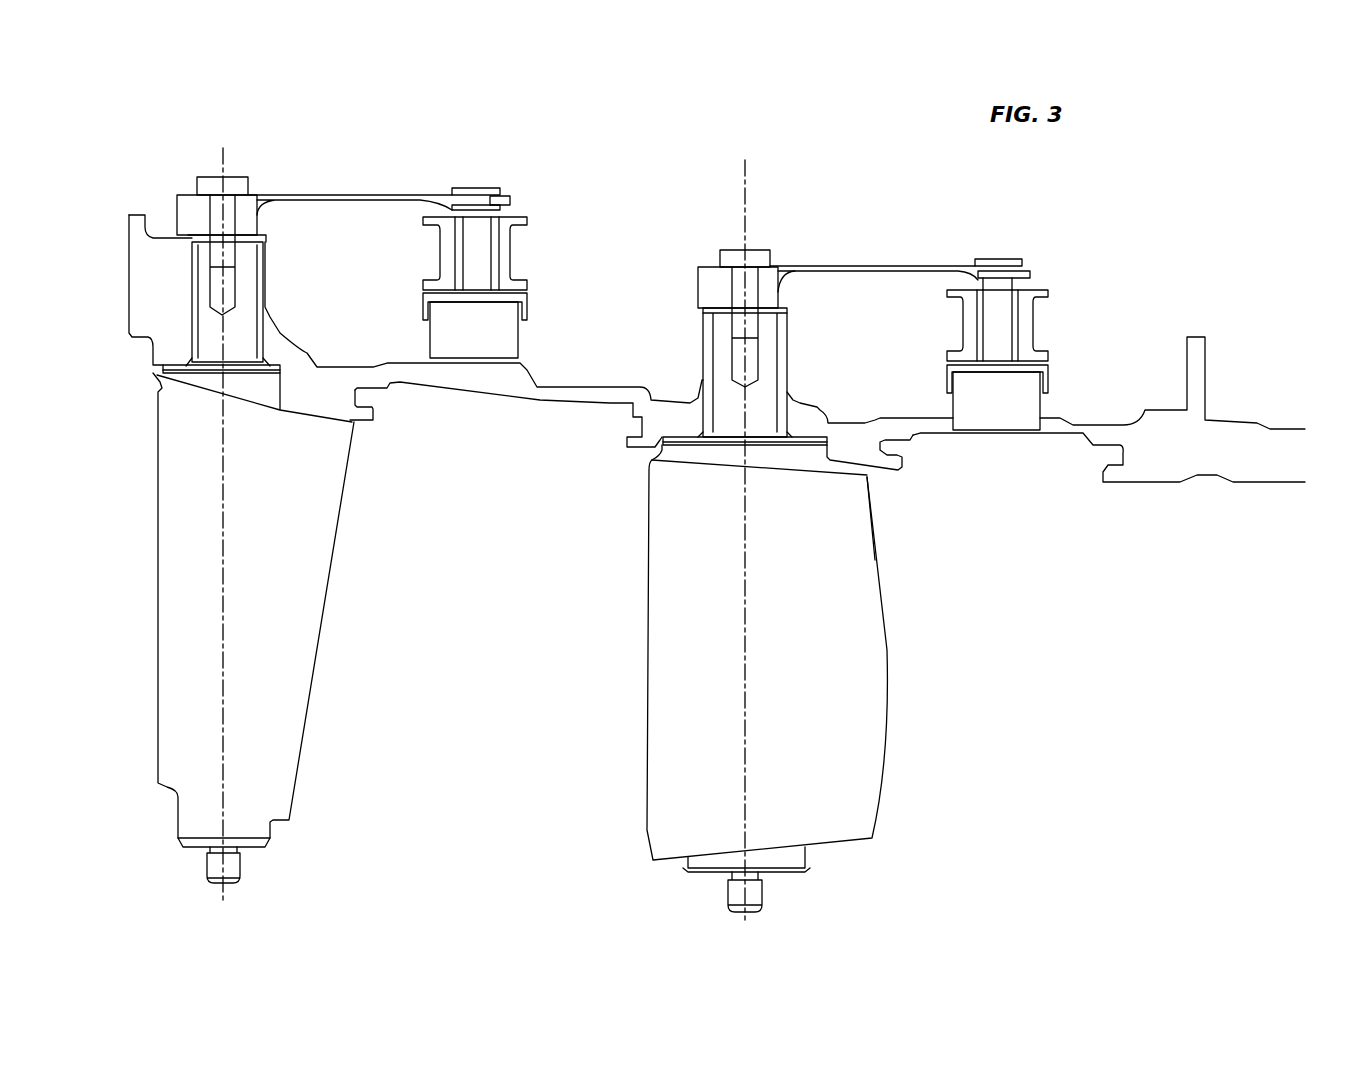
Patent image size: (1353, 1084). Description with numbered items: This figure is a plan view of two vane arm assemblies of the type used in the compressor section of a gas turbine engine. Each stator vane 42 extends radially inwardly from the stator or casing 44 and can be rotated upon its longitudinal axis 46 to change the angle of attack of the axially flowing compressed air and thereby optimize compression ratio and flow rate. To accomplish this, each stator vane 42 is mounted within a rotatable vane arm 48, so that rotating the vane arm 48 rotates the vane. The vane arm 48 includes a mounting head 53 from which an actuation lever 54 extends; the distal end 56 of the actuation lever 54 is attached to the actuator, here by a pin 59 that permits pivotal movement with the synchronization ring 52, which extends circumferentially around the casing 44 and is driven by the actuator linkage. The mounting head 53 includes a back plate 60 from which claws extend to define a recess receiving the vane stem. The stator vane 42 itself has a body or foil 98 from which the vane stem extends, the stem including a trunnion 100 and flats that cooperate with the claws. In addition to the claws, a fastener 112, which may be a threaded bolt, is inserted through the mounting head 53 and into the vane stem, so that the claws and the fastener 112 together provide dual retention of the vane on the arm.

The stator vane 42 is at (287, 728).
The casing 44 is at (1236, 433).
The longitudinal axis 46 is at (223, 787).
The vane arm 48 is at (390, 193).
The synchronization ring 52 is at (447, 280).
The mounting head 53 is at (185, 193).
The actuation lever 54 is at (511, 200).
The distal end 56 is at (484, 166).
The pin 59 is at (490, 192).
The back plate 60 is at (787, 263).
The foil 98 is at (863, 563).
The trunnion 100 is at (252, 257).
The fastener 112 is at (227, 172).